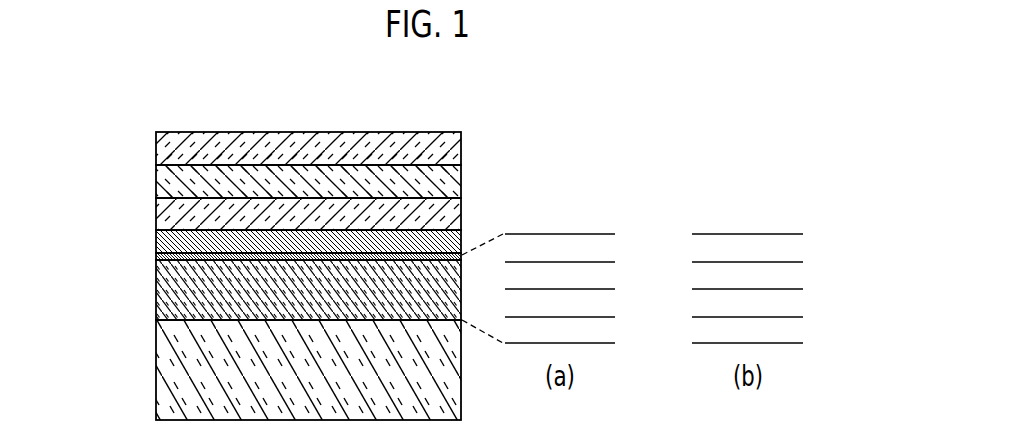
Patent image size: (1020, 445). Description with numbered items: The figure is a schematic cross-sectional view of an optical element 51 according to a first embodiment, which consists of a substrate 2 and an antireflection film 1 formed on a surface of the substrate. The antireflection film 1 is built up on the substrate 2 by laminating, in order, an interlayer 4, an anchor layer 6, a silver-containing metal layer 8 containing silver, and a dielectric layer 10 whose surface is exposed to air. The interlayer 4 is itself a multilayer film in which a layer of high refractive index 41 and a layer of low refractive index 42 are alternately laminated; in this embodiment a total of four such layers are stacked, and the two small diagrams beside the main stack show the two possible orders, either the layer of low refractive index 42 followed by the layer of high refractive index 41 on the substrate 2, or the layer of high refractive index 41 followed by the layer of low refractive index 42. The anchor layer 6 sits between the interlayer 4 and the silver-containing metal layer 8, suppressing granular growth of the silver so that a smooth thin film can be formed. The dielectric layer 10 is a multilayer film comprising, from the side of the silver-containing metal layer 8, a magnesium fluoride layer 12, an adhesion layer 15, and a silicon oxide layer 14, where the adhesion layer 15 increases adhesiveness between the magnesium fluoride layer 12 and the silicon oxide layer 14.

The antireflection film 1 is at (242, 217).
The substrate 2 is at (156, 374).
The interlayer 4 is at (289, 292).
The anchor layer 6 is at (156, 256).
The silver-containing metal layer 8 is at (156, 233).
The dielectric layer 10 is at (258, 170).
The magnesium fluoride layer 12 is at (282, 200).
The silicon oxide layer 14 is at (156, 147).
The adhesion layer 15 is at (156, 178).
The layer of high refractive index 41 is at (608, 250).
The layer of low refractive index 42 is at (608, 278).
The optical element 51 is at (242, 238).